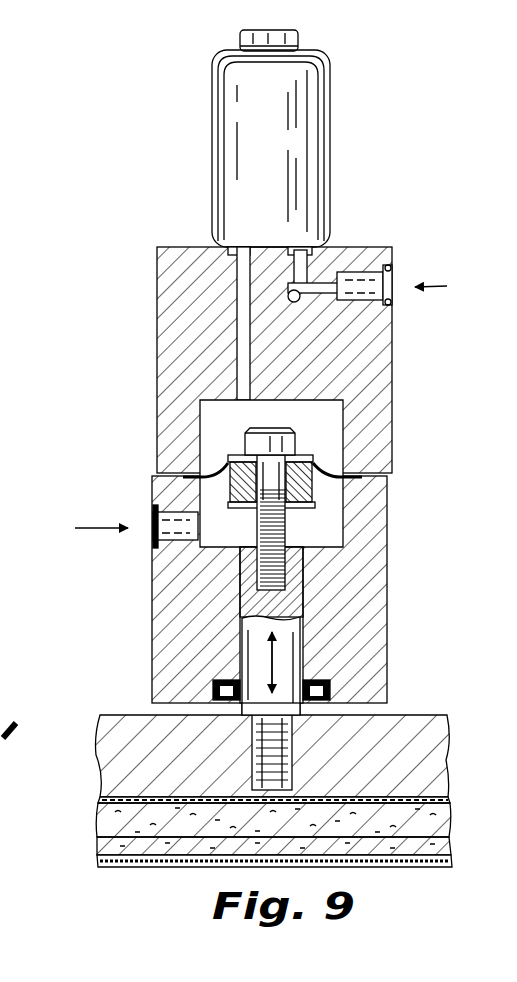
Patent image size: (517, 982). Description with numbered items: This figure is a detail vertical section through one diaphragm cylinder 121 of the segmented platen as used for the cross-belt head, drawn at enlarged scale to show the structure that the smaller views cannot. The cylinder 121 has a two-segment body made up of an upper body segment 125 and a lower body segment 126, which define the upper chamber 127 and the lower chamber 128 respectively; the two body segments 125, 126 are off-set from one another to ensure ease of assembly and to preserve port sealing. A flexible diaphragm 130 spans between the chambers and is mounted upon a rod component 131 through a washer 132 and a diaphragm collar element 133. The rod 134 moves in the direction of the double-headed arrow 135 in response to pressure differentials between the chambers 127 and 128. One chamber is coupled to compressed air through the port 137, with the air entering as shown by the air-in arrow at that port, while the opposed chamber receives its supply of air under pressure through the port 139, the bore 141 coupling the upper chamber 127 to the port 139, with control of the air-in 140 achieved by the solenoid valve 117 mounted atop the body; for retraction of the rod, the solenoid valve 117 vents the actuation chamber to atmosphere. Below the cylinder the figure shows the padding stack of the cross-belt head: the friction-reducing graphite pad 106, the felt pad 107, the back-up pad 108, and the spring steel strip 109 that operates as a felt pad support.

The graphite pad 106 is at (100, 862).
The felt pad 107 is at (100, 848).
The back-up pad 108 is at (100, 822).
The spring steel strip 109 is at (100, 800).
The solenoid valve 117 is at (212, 135).
The diaphragm cylinder 121 is at (271, 451).
The upper body segment 125 is at (393, 381).
The lower body segment 126 is at (387, 605).
The upper chamber 127 is at (343, 428).
The lower chamber 128 is at (328, 520).
The flexible diaphragm 130 is at (225, 477).
The rod component 131 is at (245, 428).
The washer 132 is at (238, 455).
The diaphragm collar element 133 is at (232, 497).
The rod 134 is at (243, 642).
The double-headed arrow 135 is at (300, 658).
The port 137 is at (152, 538).
The port 139 is at (379, 248).
The air-in arrow 140 is at (447, 286).
The bore 141 is at (237, 288).